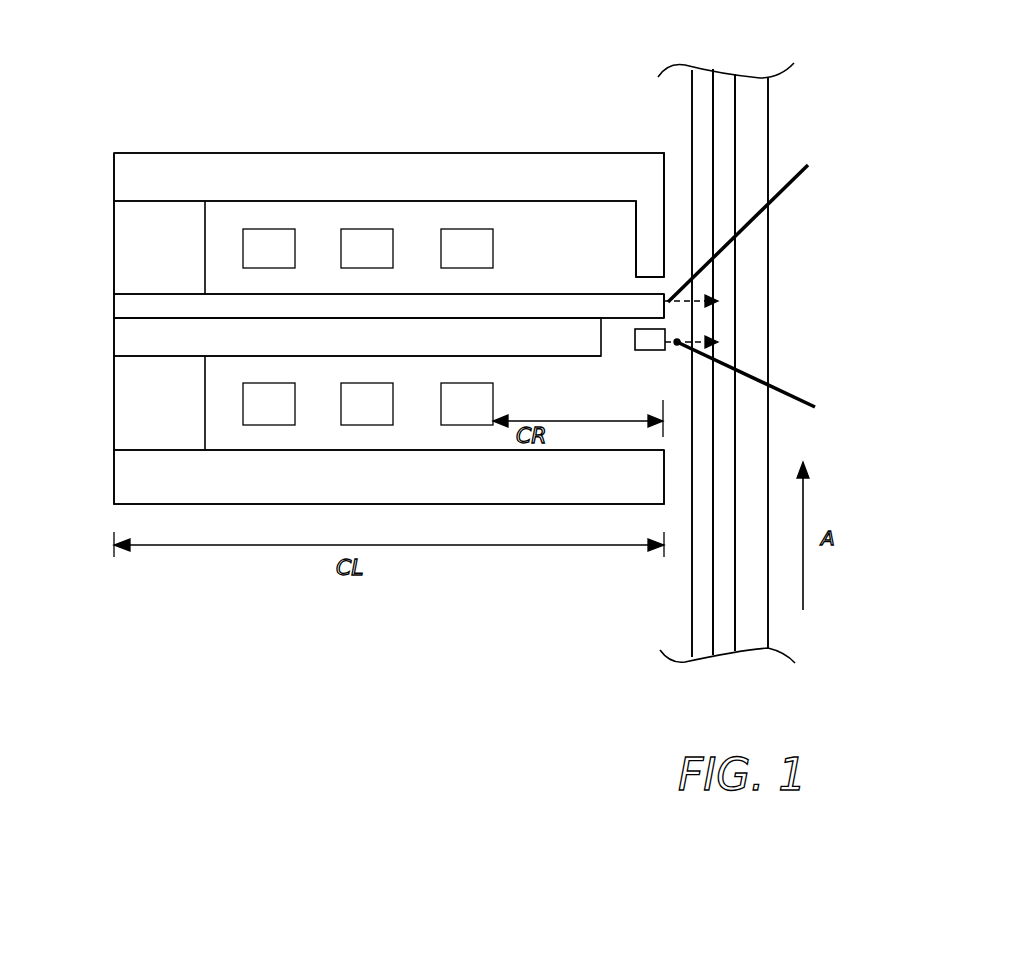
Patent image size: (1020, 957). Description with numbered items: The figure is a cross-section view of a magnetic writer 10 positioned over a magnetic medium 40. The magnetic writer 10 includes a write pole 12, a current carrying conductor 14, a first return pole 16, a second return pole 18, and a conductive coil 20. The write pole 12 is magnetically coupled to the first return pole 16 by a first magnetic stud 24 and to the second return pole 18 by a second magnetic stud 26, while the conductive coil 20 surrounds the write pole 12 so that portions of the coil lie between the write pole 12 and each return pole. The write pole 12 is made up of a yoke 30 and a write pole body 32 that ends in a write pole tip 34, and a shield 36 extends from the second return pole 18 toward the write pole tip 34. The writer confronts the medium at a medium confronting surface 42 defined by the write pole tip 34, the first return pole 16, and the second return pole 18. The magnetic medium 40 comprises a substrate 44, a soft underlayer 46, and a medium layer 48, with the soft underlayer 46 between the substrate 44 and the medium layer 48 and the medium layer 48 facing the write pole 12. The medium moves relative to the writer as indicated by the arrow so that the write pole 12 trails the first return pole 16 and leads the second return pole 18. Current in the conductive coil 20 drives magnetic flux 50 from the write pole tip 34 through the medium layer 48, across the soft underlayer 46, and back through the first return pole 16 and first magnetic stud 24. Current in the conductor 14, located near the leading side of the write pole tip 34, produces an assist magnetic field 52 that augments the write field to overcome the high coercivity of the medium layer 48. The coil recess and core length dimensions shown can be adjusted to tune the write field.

The magnetic writer 10 is at (190, 116).
The write pole 12 is at (92, 320).
The current carrying conductor 14 is at (655, 345).
The first return pole 16 is at (122, 477).
The second return pole 18 is at (124, 183).
The conductive coil 20 is at (506, 230).
The first magnetic stud 24 is at (122, 422).
The second magnetic stud 26 is at (128, 241).
The yoke 30 is at (113, 343).
The write pole body 32 is at (118, 308).
The write pole tip 34 is at (630, 306).
The shield 36 is at (641, 241).
The magnetic medium 40 is at (815, 110).
The medium confronting surface 42 is at (671, 172).
The substrate 44 is at (755, 250).
The soft underlayer 46 is at (720, 285).
The medium layer 48 is at (702, 332).
The magnetic flux 50 is at (755, 230).
The assist magnetic field 52 is at (764, 380).